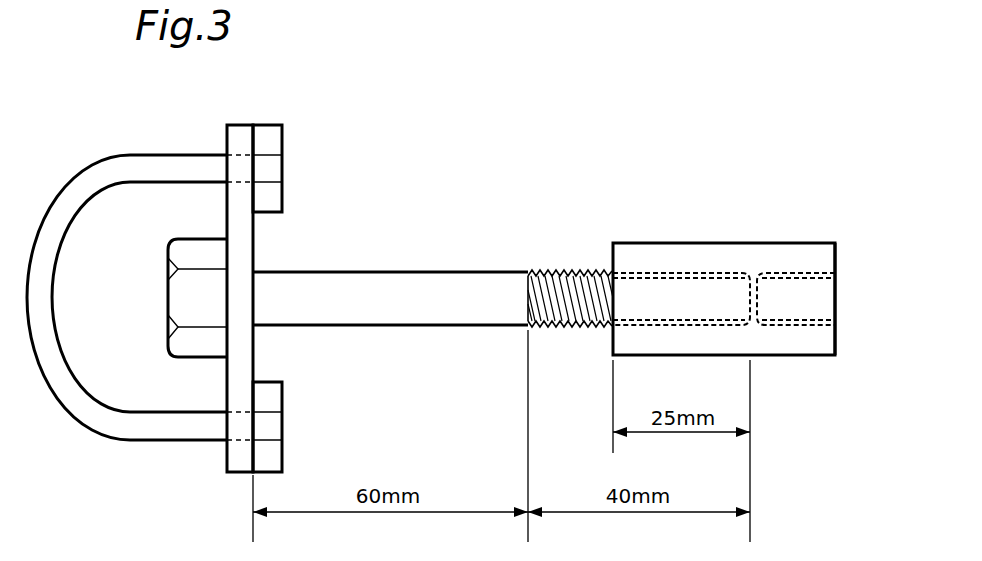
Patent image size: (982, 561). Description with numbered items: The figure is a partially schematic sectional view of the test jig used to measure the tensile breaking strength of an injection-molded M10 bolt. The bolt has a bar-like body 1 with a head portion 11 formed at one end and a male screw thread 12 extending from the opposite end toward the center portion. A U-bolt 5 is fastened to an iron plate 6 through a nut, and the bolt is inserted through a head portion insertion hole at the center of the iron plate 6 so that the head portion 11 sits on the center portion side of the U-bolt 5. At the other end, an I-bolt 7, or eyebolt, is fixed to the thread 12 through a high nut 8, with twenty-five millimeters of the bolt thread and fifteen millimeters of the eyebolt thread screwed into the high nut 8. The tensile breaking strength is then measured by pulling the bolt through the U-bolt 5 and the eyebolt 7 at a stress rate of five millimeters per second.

The bar-like body 1 is at (410, 272).
The U-bolt 5 is at (57, 291).
The iron plate 6 is at (255, 254).
The I-bolt (eyebolt) 7 is at (835, 300).
The high nut 8 is at (713, 243).
The head portion 11 is at (170, 327).
The male screw thread 12 is at (560, 272).